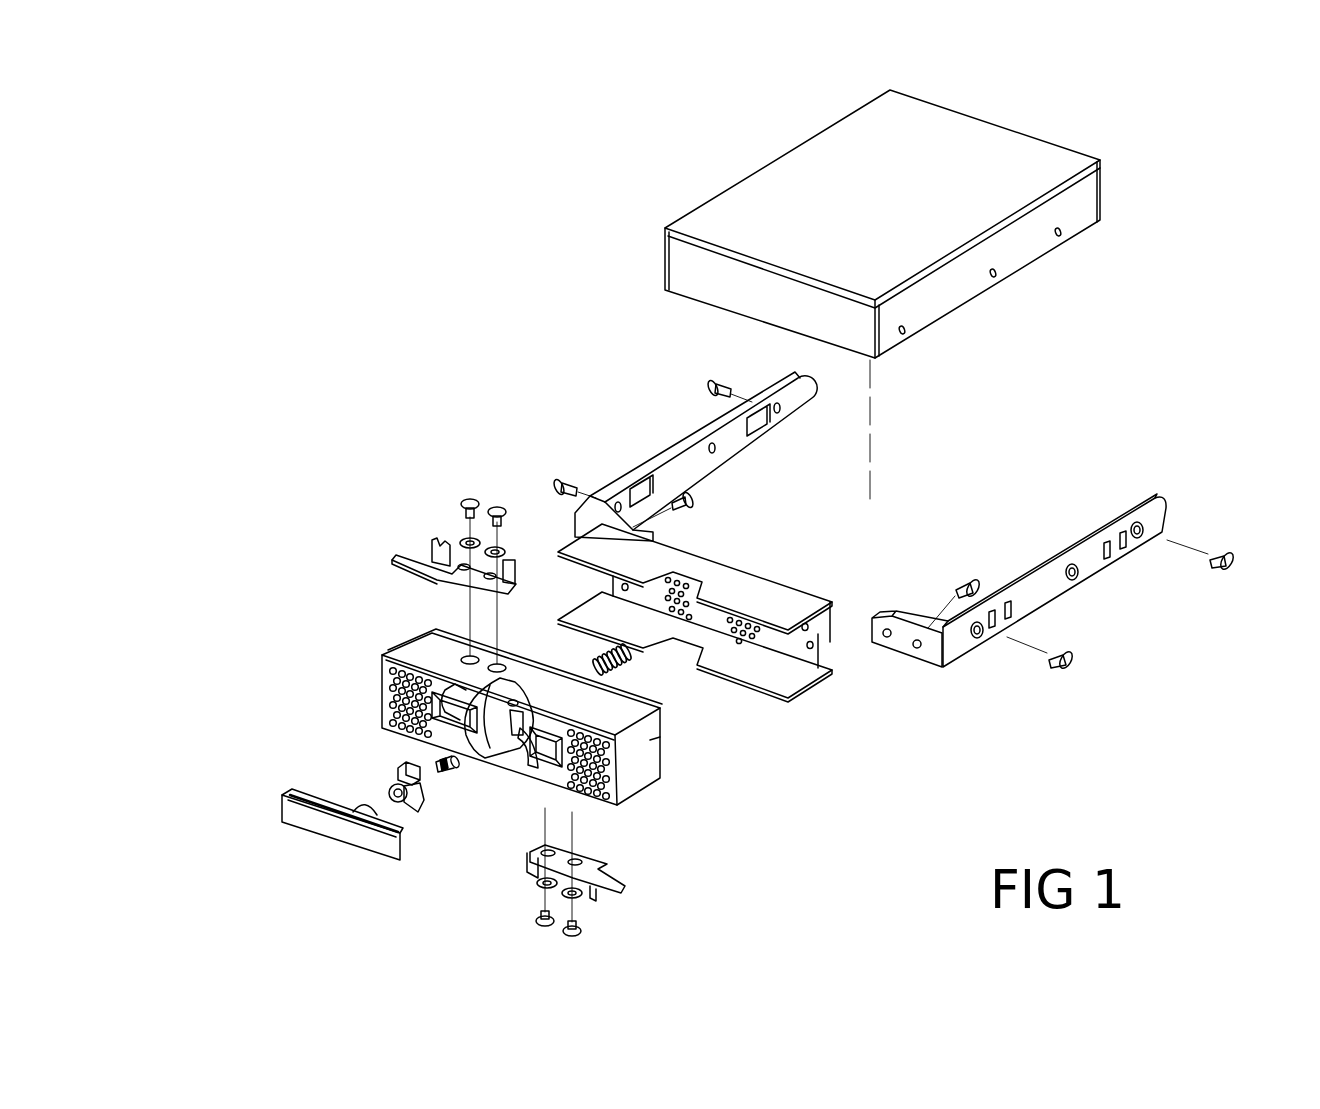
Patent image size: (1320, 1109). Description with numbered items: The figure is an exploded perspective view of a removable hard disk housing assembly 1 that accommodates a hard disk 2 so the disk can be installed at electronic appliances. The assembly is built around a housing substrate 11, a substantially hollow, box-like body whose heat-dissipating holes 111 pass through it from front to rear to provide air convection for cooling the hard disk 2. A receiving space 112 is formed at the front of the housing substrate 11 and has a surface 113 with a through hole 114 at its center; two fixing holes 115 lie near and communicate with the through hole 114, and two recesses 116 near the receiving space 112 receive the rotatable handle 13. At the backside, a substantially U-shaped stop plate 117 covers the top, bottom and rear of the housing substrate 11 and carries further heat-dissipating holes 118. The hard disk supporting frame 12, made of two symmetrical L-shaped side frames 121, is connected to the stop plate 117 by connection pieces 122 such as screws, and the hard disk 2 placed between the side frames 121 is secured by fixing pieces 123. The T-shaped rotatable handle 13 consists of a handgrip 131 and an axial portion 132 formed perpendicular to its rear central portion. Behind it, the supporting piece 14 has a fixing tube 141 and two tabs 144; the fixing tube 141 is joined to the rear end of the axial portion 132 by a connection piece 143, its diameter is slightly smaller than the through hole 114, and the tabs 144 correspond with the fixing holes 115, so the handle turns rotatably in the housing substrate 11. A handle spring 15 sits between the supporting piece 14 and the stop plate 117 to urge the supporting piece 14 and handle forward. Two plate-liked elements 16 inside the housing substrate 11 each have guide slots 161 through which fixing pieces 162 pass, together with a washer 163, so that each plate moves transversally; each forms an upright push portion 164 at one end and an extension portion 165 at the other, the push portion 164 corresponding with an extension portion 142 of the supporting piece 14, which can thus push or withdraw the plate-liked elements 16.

The removable hard disk housing assembly 1 is at (262, 834).
The hard disk 2 is at (1124, 206).
The housing substrate 11 is at (569, 647).
The hard disk supporting frame 12 is at (1054, 624).
The rotatable handle 13 is at (304, 852).
The supporting piece 14 is at (354, 816).
The handle spring 15 is at (634, 672).
The plate-liked element 16 is at (517, 678).
The heat-dissipating holes 111 is at (438, 716).
The receiving space 112 is at (497, 728).
The surface 113 is at (523, 742).
The through hole 114 is at (522, 722).
The fixing holes 115 is at (512, 700).
The recesses 116 is at (393, 649).
The stop plate 117 is at (736, 582).
The heat-dissipating holes 118 is at (768, 614).
The side frames 121 is at (1095, 572).
The screw 122 is at (975, 585).
The fixing pieces 123 is at (1070, 660).
The handgrip 131 is at (360, 838).
The axial portion 132 is at (352, 806).
The fixing tube 141 is at (410, 772).
The extension portion 142 is at (408, 812).
The connection piece 143 is at (436, 762).
The tabs 144 is at (414, 798).
The guide slots 161 is at (438, 580).
The fixing pieces 162 is at (469, 497).
The washer 163 is at (463, 538).
The push portion 164 is at (500, 543).
The extension portion 165 is at (430, 546).